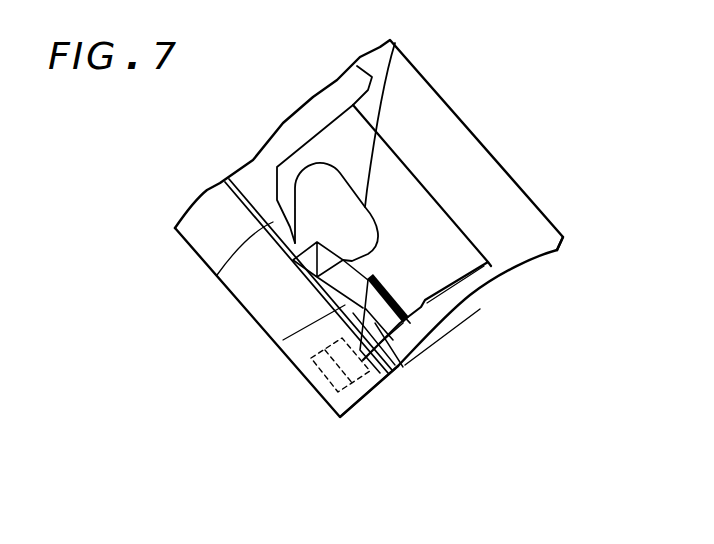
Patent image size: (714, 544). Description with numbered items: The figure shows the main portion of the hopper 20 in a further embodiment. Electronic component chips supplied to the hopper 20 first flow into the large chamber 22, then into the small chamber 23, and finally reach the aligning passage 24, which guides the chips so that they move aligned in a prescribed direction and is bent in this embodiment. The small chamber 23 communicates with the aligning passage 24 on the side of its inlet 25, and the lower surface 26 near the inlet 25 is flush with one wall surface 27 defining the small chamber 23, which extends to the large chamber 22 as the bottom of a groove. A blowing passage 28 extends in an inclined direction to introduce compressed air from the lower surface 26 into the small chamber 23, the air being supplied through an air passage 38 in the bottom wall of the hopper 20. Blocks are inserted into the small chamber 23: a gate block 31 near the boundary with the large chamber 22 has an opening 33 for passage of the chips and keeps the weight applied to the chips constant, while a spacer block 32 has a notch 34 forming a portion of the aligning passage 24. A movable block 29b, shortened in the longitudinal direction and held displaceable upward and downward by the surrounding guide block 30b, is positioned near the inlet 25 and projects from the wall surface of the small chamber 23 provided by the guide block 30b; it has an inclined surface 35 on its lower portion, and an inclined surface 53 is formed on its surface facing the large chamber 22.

The hopper 20 is at (494, 110).
The large chamber 22 is at (265, 147).
The small chamber 23 is at (350, 214).
The aligning passage 24 is at (401, 358).
The inlet 25 is at (480, 309).
The lower surface 26 is at (389, 378).
The wall surface 27 is at (323, 298).
The blowing passage 28 is at (388, 382).
The movable block 29b is at (393, 298).
The guide block 30b is at (423, 201).
The gate block 31 is at (388, 50).
The spacer block 32 is at (484, 266).
The opening 33 is at (274, 222).
The notch 34 is at (387, 350).
The inclined surface 35 is at (335, 386).
The air passage 38 is at (330, 398).
The inclined surface 53 is at (345, 305).